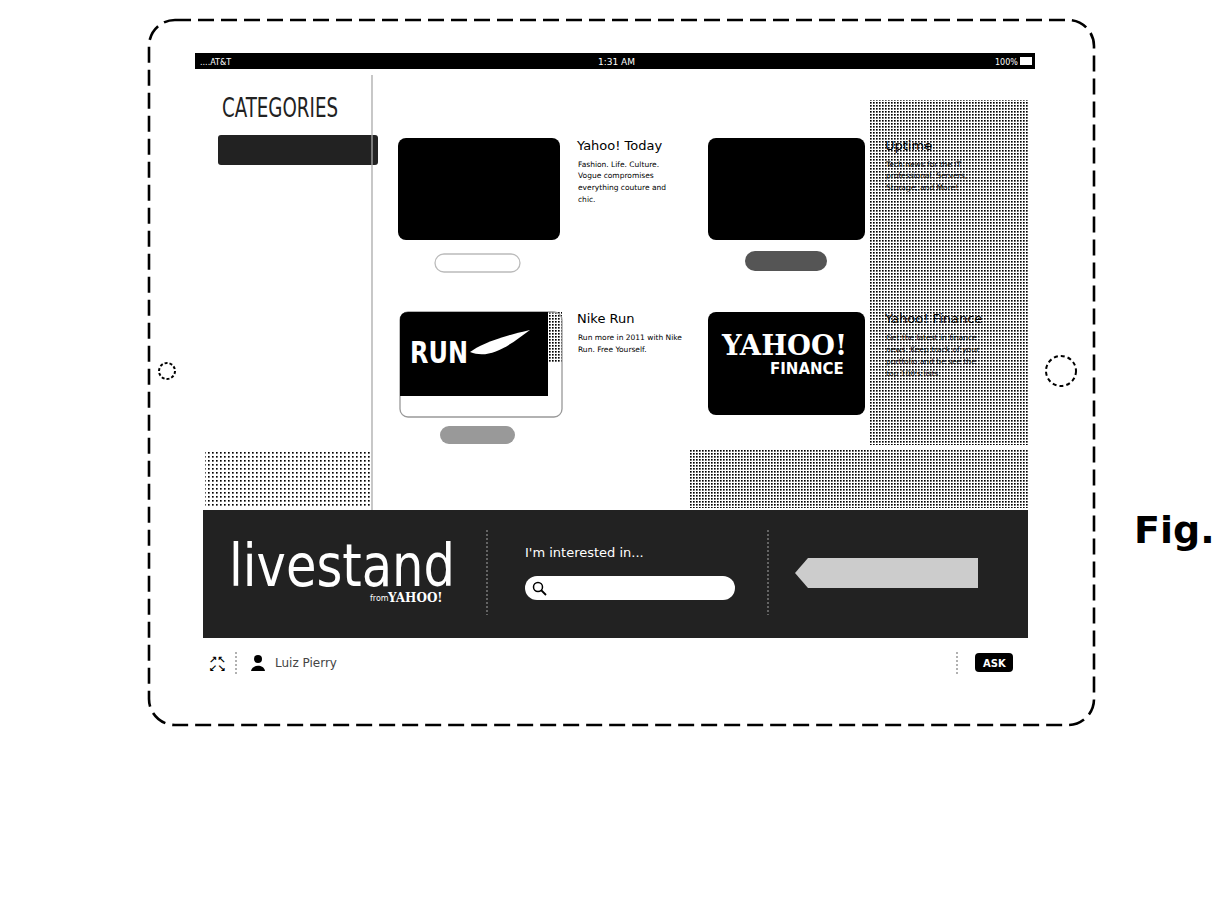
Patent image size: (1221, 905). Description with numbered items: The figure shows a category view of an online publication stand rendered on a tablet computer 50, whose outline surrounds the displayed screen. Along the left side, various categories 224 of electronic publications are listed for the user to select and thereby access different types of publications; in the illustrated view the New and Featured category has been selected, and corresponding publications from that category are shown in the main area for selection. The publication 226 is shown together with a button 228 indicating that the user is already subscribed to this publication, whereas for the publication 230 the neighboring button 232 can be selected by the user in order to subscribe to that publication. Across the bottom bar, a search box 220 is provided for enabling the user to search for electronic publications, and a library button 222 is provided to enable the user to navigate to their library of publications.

The tablet device 50 is at (1095, 193).
The search box 220 is at (604, 597).
The library button 222 is at (948, 560).
The categories 224 is at (226, 219).
The publication 226 is at (470, 138).
The button 228 is at (521, 262).
The publication 230 is at (780, 138).
The button 232 is at (828, 259).